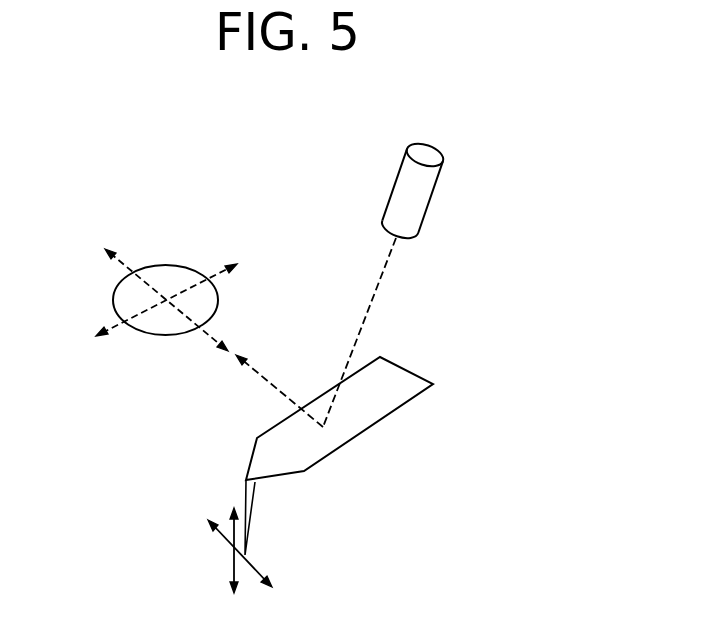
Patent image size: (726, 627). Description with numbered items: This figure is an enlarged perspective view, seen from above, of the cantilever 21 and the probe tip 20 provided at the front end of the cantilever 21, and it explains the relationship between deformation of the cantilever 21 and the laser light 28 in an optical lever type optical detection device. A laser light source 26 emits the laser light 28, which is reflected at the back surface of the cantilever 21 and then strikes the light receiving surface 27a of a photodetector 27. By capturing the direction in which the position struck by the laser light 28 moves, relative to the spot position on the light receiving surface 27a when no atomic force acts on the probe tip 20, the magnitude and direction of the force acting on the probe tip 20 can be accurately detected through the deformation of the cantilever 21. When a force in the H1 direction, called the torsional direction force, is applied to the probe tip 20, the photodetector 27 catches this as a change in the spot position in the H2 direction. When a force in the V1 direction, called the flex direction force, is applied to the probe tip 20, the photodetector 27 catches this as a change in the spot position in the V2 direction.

The probe tip 20 is at (243, 495).
The cantilever 21 is at (357, 437).
The laser light source 26 is at (418, 197).
The photodetector 27 is at (167, 258).
The light receiving surface 27a is at (208, 302).
The laser light 28 is at (373, 302).
The V1 direction V1 is at (233, 565).
The H1 direction H1 is at (247, 557).
The V2 direction V2 is at (152, 318).
The H2 direction H2 is at (170, 318).